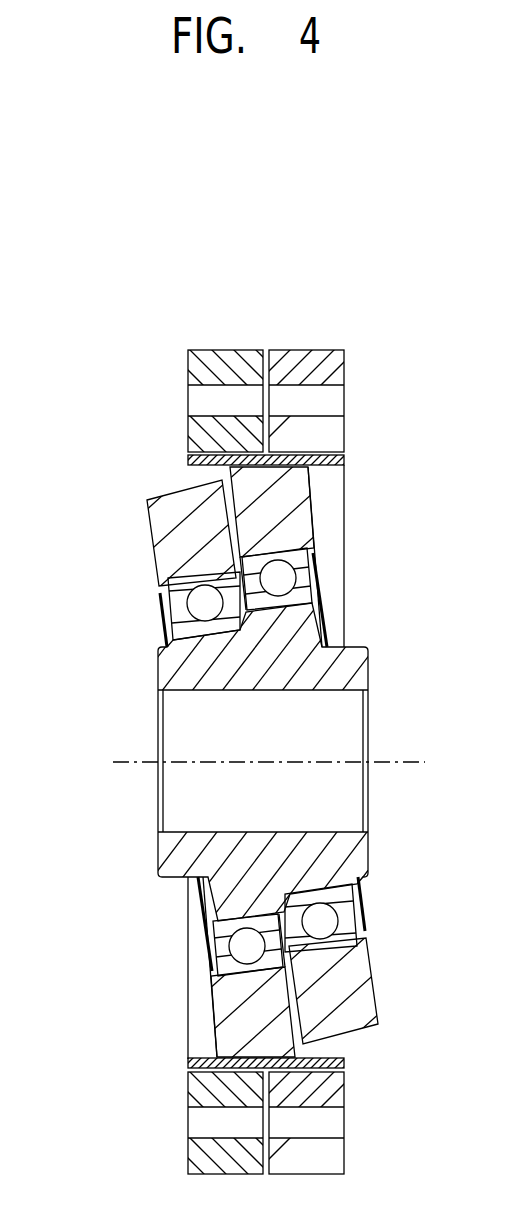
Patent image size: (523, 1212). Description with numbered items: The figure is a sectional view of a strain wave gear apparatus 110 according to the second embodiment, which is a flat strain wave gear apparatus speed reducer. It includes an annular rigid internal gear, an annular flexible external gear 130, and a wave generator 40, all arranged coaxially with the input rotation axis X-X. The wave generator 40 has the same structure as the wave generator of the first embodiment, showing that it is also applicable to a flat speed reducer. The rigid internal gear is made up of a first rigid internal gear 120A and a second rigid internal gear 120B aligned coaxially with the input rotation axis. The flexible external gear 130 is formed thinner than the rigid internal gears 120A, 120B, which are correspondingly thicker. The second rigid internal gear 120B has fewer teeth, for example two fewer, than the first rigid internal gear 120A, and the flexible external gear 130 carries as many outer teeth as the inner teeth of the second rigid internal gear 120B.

The strain wave gear apparatus 110 is at (340, 160).
The first rigid internal gear 120A is at (216, 360).
The second rigid internal gear 120B is at (303, 360).
The flexible external gear 130 is at (344, 458).
The wave generator 40 is at (118, 676).